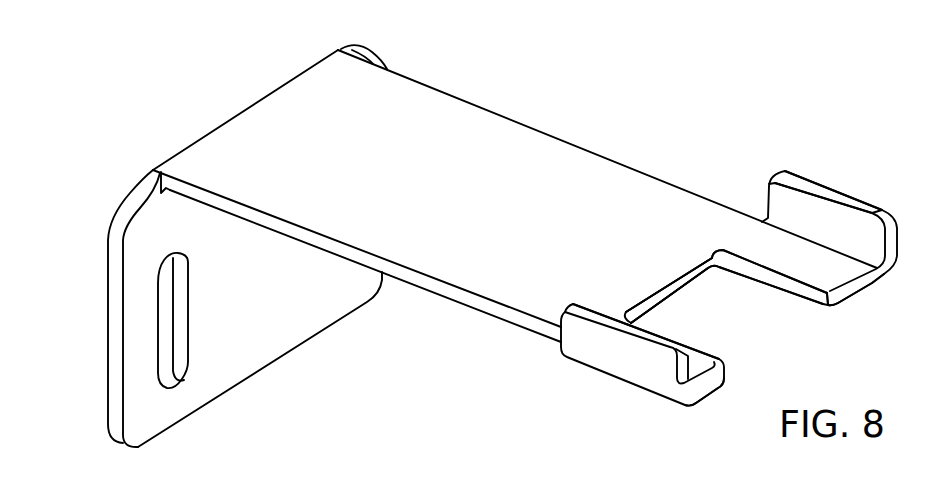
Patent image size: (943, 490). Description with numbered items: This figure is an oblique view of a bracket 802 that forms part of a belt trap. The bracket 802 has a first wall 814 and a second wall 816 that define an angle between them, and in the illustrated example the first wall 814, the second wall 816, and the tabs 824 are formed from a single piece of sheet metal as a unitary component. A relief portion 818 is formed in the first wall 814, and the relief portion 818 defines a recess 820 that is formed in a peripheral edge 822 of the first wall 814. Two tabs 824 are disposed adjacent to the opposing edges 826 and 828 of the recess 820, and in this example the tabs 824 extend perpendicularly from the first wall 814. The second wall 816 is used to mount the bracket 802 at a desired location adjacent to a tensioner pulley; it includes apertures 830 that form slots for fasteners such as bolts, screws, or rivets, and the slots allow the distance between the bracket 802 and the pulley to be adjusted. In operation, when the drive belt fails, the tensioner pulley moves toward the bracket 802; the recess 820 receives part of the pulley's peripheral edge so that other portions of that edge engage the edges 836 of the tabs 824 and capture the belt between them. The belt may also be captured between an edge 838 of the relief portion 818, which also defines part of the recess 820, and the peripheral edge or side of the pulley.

The bracket 802 is at (698, 77).
The first wall 814 is at (537, 131).
The second wall 816 is at (108, 358).
The relief portion 818 is at (642, 298).
The recess 820 is at (726, 286).
The peripheral edge 822 is at (707, 397).
The tabs 824 is at (642, 343).
The edge of the recess 826 is at (713, 350).
The edge of the recess 828 is at (805, 297).
The apertures 830 is at (158, 340).
The edges of the tabs 836 is at (598, 322).
The edge of the relief portion 838 is at (683, 274).